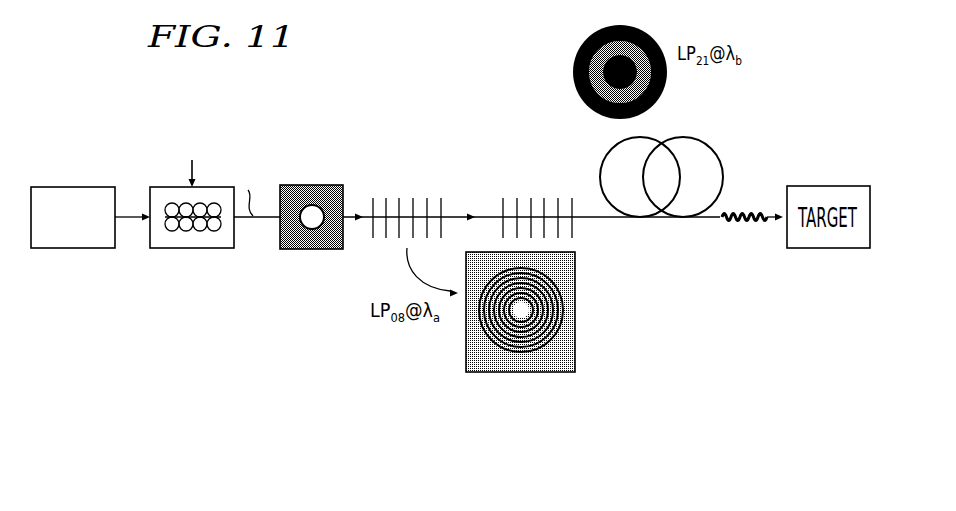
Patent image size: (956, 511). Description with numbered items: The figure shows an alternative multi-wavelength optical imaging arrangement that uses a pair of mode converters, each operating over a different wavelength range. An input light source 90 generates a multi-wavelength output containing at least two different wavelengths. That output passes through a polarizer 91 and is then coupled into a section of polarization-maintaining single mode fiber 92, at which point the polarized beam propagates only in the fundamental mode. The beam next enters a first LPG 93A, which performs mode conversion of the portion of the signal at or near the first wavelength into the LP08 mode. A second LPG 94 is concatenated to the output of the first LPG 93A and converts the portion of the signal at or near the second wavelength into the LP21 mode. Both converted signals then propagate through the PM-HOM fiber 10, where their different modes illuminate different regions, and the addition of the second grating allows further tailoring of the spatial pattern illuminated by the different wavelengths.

The input light source 90 is at (60, 187).
The polarizer 91 is at (187, 248).
The polarization-maintaining single mode fiber 92 is at (267, 220).
The first LPG 93A is at (410, 130).
The second LPG 94 is at (525, 130).
The PM-HOM fiber 10 is at (711, 148).